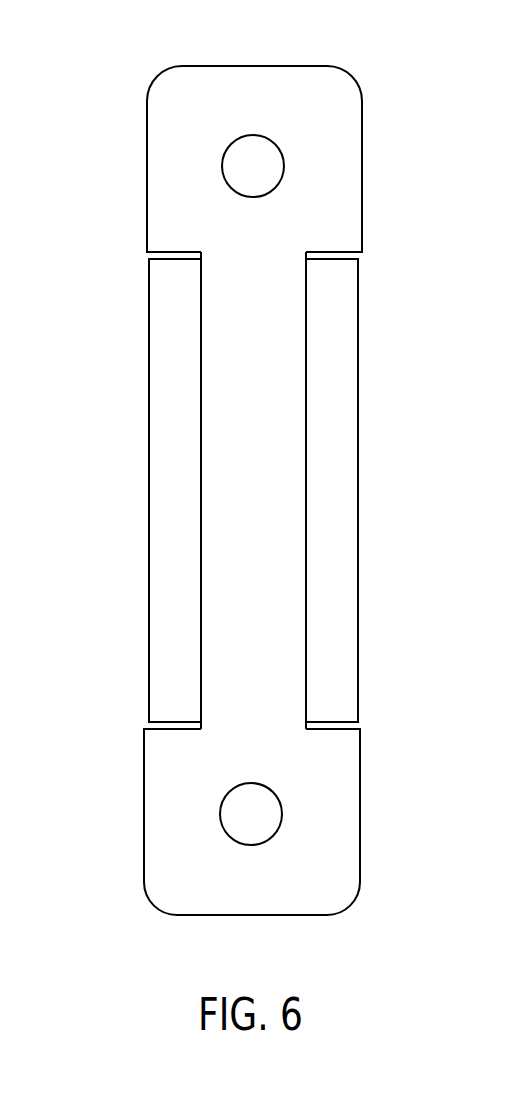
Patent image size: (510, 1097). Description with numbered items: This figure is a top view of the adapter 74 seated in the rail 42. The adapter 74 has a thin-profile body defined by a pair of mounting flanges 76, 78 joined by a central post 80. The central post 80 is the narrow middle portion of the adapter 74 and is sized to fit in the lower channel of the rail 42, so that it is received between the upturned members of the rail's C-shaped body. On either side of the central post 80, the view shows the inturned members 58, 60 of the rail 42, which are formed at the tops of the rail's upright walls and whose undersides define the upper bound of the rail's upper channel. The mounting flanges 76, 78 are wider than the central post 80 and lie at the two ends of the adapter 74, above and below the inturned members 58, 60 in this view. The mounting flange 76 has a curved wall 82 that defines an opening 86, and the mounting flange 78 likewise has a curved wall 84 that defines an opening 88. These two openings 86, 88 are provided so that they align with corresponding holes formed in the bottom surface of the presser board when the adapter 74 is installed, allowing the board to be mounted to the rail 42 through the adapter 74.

The adapter 74 is at (246, 492).
The rail 42 is at (371, 490).
The mounting flange 78 is at (293, 136).
The mounting flange 76 is at (279, 846).
The central post 80 is at (263, 503).
The inturned member 58 is at (173, 577).
The inturned member 60 is at (333, 577).
The curved wall 84 is at (321, 109).
The opening 86 is at (317, 870).
The opening 88 is at (248, 158).
The curved wall 82 is at (227, 830).